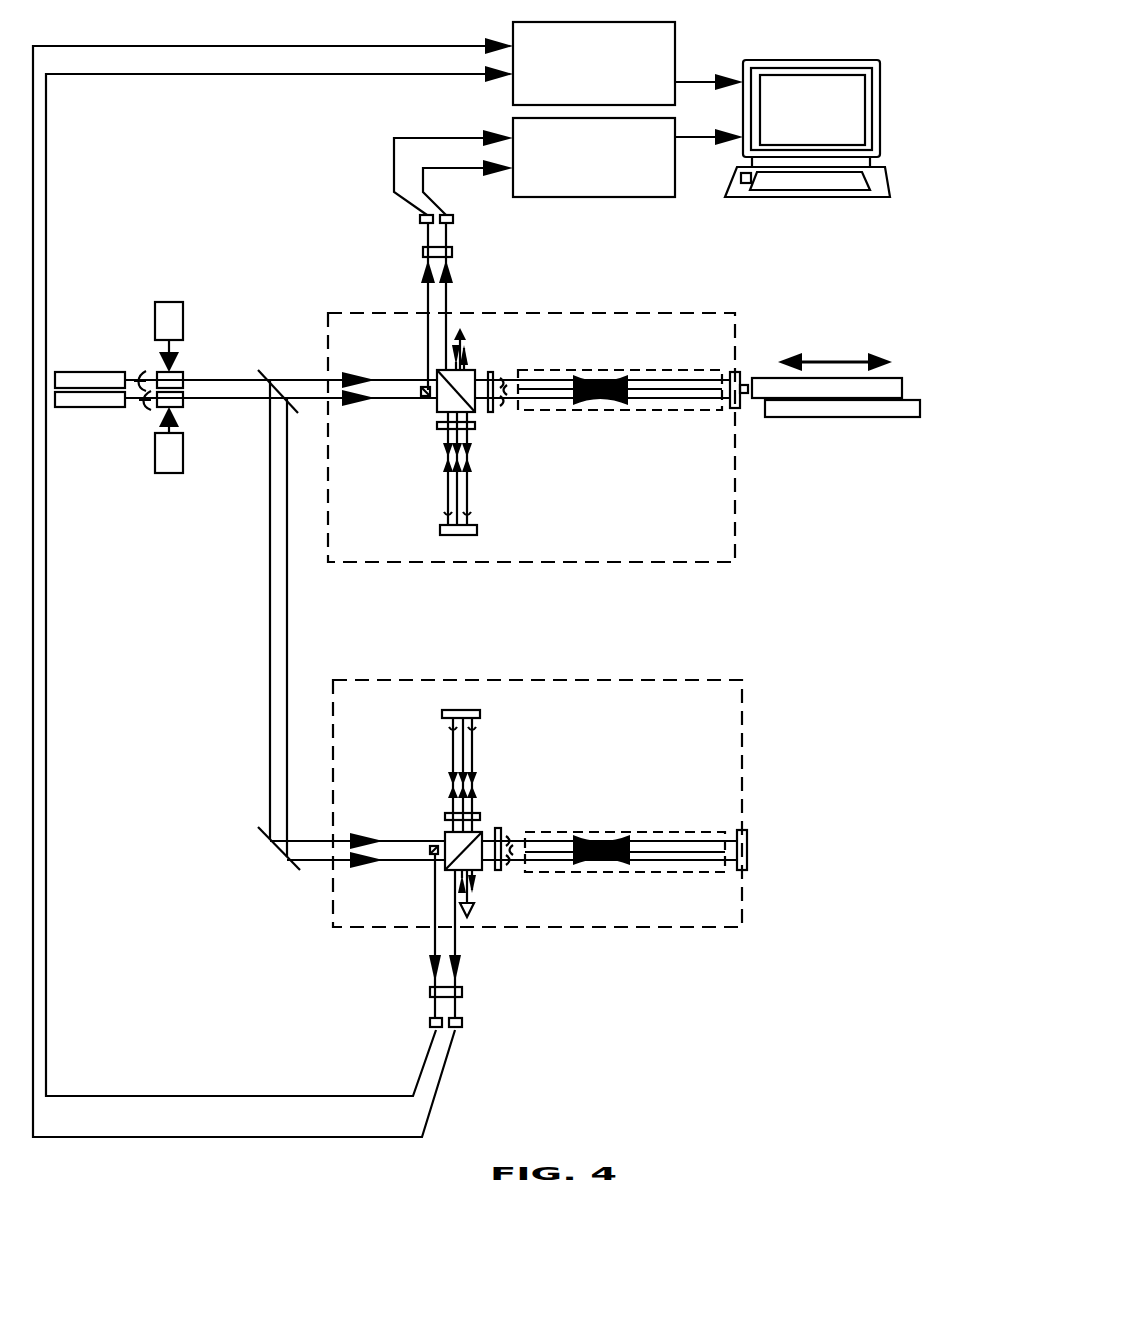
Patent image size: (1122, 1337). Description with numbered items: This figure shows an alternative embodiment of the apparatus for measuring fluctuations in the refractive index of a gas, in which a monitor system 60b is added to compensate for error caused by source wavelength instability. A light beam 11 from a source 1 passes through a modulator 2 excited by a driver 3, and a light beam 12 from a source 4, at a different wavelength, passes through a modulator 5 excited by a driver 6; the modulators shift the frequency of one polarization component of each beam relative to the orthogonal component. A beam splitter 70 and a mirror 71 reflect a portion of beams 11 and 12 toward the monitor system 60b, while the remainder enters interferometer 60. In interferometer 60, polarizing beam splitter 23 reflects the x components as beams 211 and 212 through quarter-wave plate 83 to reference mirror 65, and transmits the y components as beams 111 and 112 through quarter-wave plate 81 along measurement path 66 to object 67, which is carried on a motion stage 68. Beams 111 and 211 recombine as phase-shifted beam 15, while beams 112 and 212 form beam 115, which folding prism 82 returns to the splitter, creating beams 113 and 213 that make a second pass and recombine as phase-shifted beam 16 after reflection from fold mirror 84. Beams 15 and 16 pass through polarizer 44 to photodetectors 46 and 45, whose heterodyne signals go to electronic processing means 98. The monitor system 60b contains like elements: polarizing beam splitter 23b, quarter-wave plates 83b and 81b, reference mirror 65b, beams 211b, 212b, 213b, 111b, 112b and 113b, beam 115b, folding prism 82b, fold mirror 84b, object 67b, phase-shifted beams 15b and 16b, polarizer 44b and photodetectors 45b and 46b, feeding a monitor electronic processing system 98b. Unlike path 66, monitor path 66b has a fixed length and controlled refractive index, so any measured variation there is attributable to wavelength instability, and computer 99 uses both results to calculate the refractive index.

The source 1 is at (92, 372).
The source 4 is at (92, 408).
The modulator 2 is at (184, 374).
The modulator 5 is at (186, 406).
The driver 3 is at (169, 326).
The driver 6 is at (169, 455).
The light beam 11 is at (140, 374).
The light beam 12 is at (148, 410).
The beam splitter 70 is at (269, 372).
The mirror 71 is at (327, 843).
The interferometer 60 is at (530, 563).
The monitor system 60b is at (575, 680).
The polarizing beam splitter 23 is at (437, 410).
The fold mirror 84 is at (423, 386).
The quarter-wave plate 83 is at (441, 430).
The beam 213 is at (455, 490).
The beam 211 is at (446, 514).
The beam 212 is at (470, 514).
The reference mirror 65 is at (440, 531).
The beam 115 is at (455, 350).
The folding prism 82 is at (461, 327).
The quarter-wave plate 81 is at (490, 372).
The beam 111 is at (502, 378).
The beam 112 is at (498, 410).
The beam 113 is at (505, 408).
The measurement path 66 is at (632, 411).
The object 67 is at (741, 372).
The motion stage 68 is at (921, 412).
The phase-shifted beam 16 is at (437, 305).
The phase-shifted beam 15 is at (442, 292).
The polarizer 44 is at (422, 250).
The photodetector 45 is at (419, 219).
The photodetector 46 is at (454, 219).
The electronic processing means 98 is at (568, 166).
The monitor electronic processing system 98b is at (388, 579).
The computer 99 is at (884, 78).
The reference mirror 65b is at (441, 714).
The beam 211b is at (452, 727).
The beam 213b is at (456, 762).
The beam 212b is at (513, 719).
The quarter-wave plate 83b is at (448, 812).
The polarizing beam splitter 23b is at (445, 835).
The fold mirror 84b is at (431, 855).
The beam 115b is at (458, 897).
The folding prism 82b is at (470, 917).
The quarter-wave plate 81b is at (497, 872).
The beam 111b is at (508, 866).
The beam 112b is at (506, 834).
The beam 113b is at (510, 836).
The monitor path 66b is at (660, 832).
The object 67b is at (747, 832).
The phase-shifted beam 16b is at (437, 940).
The phase-shifted beam 15b is at (458, 950).
The polarizer 44b is at (463, 993).
The photodetector 45b is at (429, 1023).
The photodetector 46b is at (463, 1023).